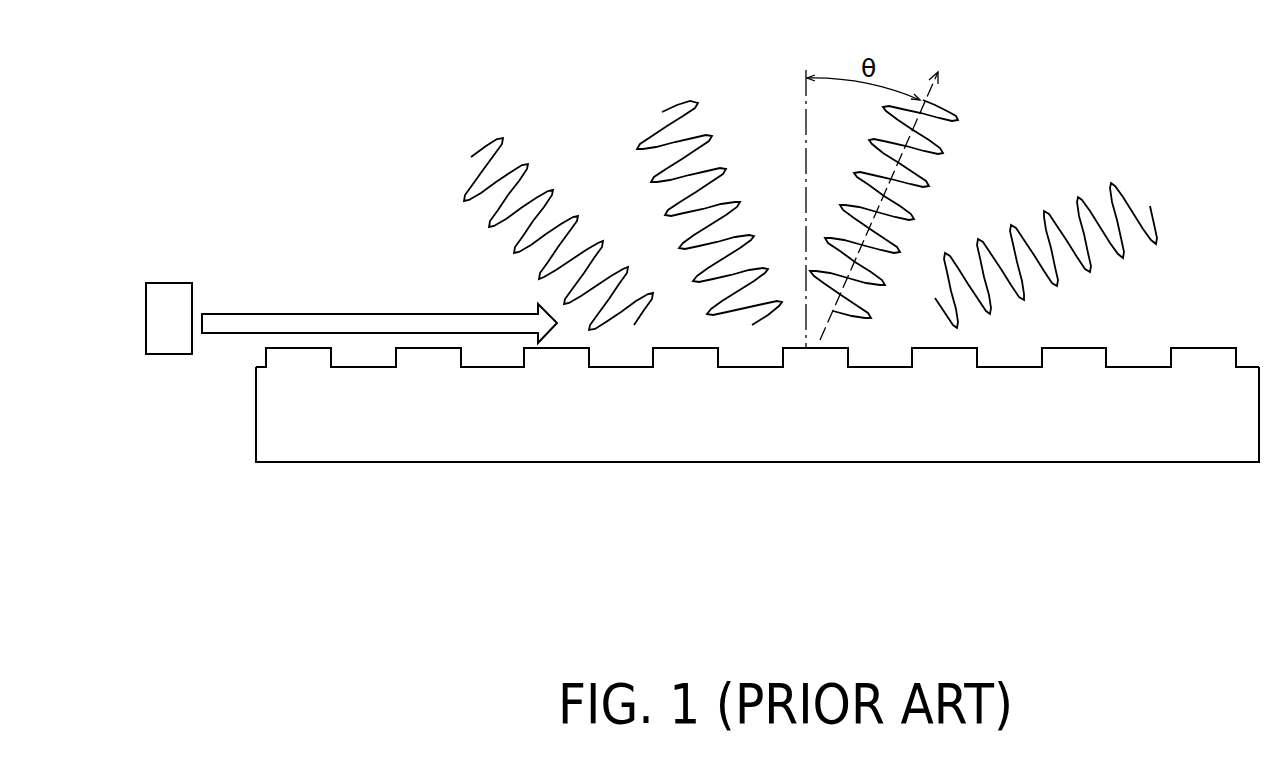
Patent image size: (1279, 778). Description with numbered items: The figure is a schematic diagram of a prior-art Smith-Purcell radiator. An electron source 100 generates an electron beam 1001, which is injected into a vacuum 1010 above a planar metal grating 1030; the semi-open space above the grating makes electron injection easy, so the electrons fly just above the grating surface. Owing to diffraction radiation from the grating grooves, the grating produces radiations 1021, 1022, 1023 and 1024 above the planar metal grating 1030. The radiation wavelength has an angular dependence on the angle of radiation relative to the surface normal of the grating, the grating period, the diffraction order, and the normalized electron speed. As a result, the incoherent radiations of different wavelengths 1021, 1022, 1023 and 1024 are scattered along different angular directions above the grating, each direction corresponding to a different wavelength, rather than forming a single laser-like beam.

The electron source 100 is at (163, 293).
The electron beam 1001 is at (383, 318).
The vacuum 1010 is at (757, 334).
The radiation 1021 is at (471, 157).
The radiation 1022 is at (662, 112).
The radiation 1023 is at (895, 185).
The radiation 1024 is at (1150, 206).
The planar metal grating 1030 is at (1212, 440).